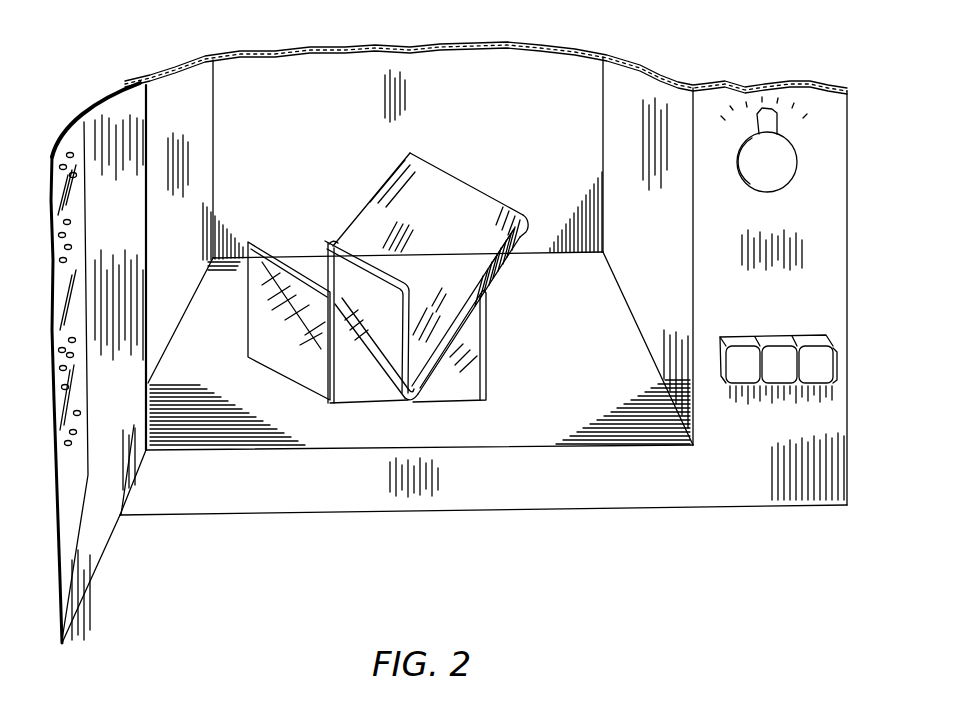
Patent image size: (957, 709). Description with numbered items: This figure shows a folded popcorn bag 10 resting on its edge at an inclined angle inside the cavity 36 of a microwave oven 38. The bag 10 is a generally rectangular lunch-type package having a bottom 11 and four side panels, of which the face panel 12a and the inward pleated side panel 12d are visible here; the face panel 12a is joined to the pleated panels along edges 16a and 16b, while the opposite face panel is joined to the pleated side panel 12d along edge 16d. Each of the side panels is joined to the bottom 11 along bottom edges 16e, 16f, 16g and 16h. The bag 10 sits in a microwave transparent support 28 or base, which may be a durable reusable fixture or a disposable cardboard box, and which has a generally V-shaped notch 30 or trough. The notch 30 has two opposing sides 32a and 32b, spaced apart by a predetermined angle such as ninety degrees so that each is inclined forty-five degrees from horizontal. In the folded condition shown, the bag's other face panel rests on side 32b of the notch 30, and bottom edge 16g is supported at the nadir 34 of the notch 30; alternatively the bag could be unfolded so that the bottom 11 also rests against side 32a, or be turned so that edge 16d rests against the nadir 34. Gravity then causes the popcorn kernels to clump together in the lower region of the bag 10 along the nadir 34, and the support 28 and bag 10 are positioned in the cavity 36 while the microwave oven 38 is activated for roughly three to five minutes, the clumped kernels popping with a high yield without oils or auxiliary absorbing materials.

The bag 10 is at (435, 268).
The bottom 11 is at (340, 243).
The face panel 12a is at (453, 188).
The pleated side panel 12d is at (528, 235).
The edge 16a is at (387, 186).
The edge 16b is at (483, 277).
The edge 16d is at (508, 253).
The bottom edge 16e is at (388, 272).
The bottom edge 16f is at (318, 263).
The bottom edge 16g is at (380, 330).
The bottom edge 16h is at (420, 373).
The support 28 is at (263, 294).
The notch 30 is at (307, 251).
The side 32a is at (270, 247).
The side 32b is at (456, 323).
The nadir 34 is at (407, 402).
The cavity 36 is at (587, 378).
The microwave oven 38 is at (657, 512).